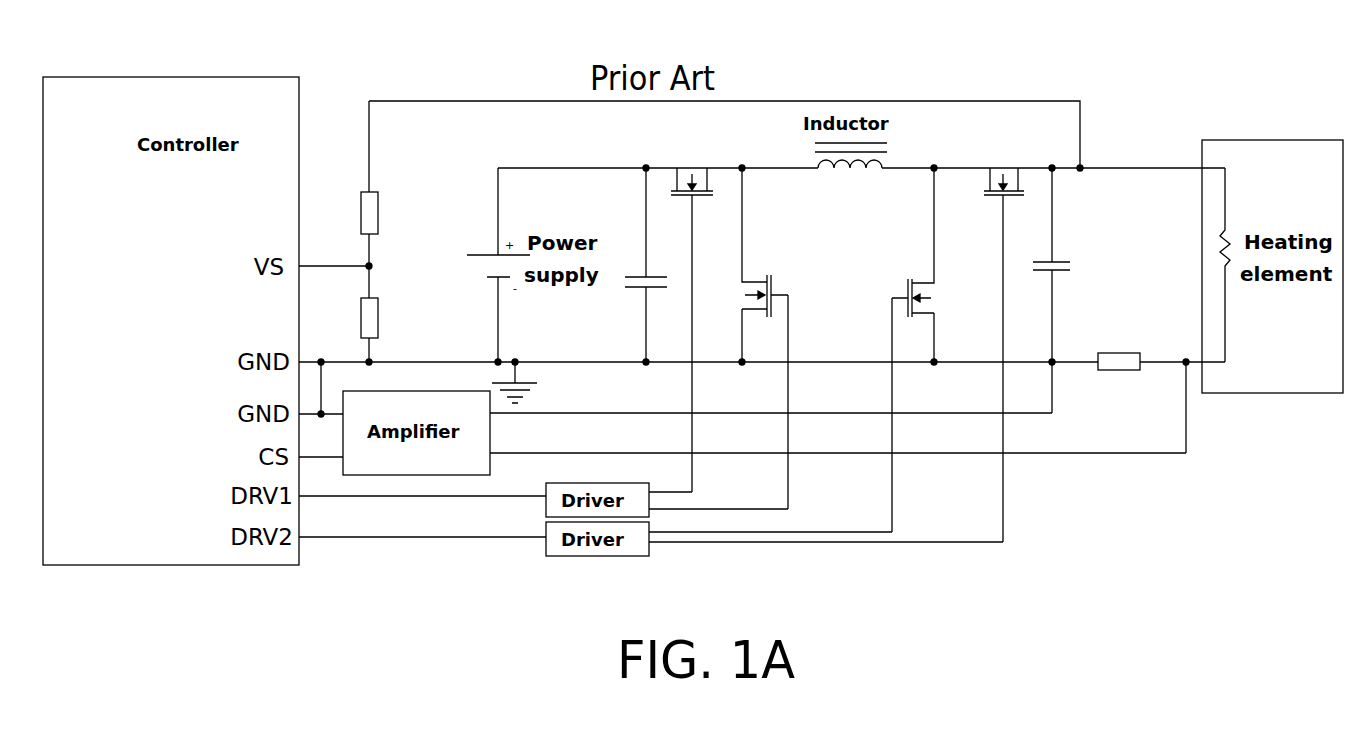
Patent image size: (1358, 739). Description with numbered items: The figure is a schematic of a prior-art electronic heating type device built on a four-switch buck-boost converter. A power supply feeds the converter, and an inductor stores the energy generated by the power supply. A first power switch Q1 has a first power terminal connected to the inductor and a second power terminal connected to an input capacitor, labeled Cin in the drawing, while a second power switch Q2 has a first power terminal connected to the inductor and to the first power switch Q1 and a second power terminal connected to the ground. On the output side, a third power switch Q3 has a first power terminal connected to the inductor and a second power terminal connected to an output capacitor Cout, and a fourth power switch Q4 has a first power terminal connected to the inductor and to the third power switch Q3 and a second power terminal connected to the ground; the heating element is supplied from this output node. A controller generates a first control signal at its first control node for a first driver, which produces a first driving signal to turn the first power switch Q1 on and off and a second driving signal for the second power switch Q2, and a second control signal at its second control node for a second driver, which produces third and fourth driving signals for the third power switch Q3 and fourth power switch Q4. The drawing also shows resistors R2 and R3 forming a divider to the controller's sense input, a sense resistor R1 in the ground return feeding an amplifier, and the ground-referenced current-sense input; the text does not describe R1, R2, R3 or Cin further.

The current sense resistor R1 is at (1161, 352).
The voltage divider resistor R2 is at (383, 183).
The voltage divider resistor R3 is at (383, 314).
The first power switch Q1 is at (692, 319).
The second power switch Q2 is at (765, 338).
The third power switch Q3 is at (1004, 344).
The fourth power switch Q4 is at (913, 350).
The input capacitor Cin is at (653, 265).
The output capacitor Cout is at (1070, 290).